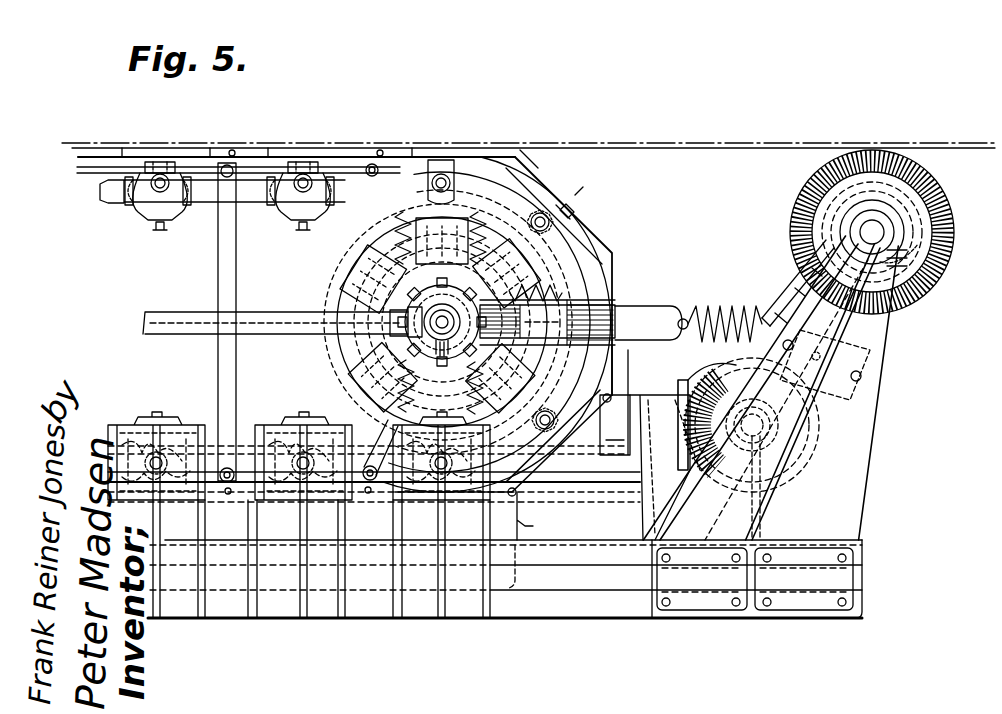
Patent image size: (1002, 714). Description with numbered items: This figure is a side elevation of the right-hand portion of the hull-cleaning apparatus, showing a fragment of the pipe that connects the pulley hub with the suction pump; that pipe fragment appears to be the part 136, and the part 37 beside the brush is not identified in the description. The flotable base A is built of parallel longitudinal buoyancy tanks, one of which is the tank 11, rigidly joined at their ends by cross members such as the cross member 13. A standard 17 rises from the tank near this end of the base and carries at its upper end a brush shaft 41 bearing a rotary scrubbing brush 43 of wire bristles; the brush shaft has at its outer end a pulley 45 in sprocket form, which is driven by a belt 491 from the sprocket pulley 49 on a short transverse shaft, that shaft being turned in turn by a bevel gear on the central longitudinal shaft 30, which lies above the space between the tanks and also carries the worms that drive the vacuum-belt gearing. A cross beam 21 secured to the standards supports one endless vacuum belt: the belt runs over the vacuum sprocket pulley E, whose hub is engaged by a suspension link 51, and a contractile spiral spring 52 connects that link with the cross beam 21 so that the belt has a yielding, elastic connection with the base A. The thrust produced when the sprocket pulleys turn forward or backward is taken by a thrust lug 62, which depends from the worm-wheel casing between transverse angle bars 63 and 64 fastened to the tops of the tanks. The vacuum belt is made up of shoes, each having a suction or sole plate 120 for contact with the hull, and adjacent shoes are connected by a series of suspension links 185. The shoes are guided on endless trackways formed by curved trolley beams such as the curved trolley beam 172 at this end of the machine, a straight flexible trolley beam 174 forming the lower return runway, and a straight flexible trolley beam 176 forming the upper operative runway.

The straight flexible trolley beam 176 is at (351, 168).
The pipe 136 is at (116, 192).
The straight flexible trolley beam 174 is at (226, 490).
The curved trolley beam 172 is at (590, 276).
The sole plate 120 is at (583, 198).
The vacuum sprocket pulley E is at (348, 268).
The suspension links 185 is at (282, 338).
The suspension link 51 is at (638, 342).
The contractile spiral spring 52 is at (724, 317).
The sprocket belt 491 is at (786, 280).
The rotary scrubbing brush 43 is at (948, 186).
The brush shaft 41 is at (882, 238).
The pulley 45 is at (915, 277).
The standard 17 is at (835, 492).
The cross beam 21 is at (865, 365).
The pulley 49 is at (790, 411).
The brush 37 is at (700, 374).
The central longitudinal shaft 30 is at (596, 442).
The thrust lug 62 is at (520, 503).
The transverse angle bar 64 is at (528, 530).
The transverse angle bar 63 is at (352, 525).
The longitudinal buoyancy tank 11 is at (520, 620).
The base A is at (604, 641).
The cross member 13 is at (816, 602).